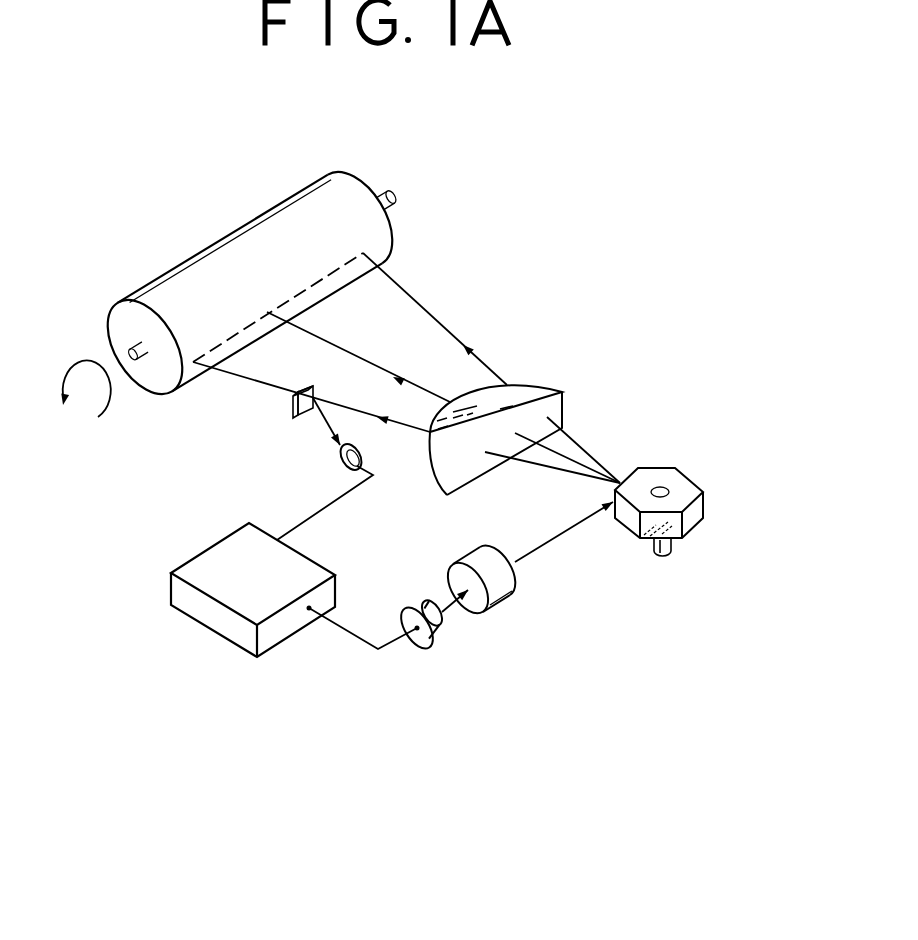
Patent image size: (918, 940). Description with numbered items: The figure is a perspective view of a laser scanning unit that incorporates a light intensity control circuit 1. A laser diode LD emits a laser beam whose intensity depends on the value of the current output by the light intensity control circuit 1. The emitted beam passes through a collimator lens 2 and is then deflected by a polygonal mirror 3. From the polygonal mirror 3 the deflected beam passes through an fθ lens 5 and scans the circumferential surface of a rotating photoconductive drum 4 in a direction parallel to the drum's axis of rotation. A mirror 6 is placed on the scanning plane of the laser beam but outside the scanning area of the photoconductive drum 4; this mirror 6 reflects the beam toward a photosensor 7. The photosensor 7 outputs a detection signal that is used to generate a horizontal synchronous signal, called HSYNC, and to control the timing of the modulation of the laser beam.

The light intensity control circuit 1 is at (217, 617).
The collimator lens 2 is at (507, 597).
The polygonal mirror 3 is at (690, 517).
The photoconductive drum 4 is at (353, 198).
The fθ lens 5 is at (535, 398).
The mirror 6 is at (293, 408).
The photosensor 7 is at (337, 467).
The laser diode LD is at (435, 640).